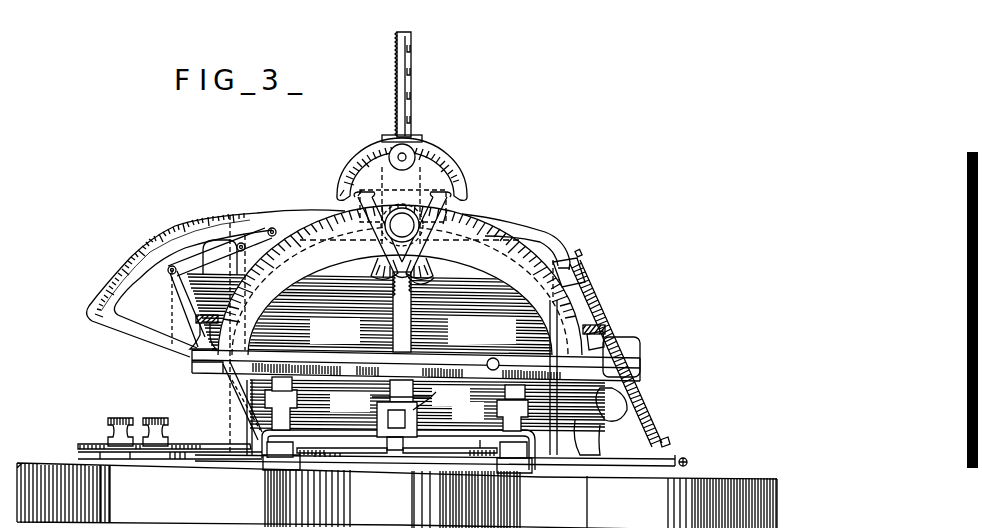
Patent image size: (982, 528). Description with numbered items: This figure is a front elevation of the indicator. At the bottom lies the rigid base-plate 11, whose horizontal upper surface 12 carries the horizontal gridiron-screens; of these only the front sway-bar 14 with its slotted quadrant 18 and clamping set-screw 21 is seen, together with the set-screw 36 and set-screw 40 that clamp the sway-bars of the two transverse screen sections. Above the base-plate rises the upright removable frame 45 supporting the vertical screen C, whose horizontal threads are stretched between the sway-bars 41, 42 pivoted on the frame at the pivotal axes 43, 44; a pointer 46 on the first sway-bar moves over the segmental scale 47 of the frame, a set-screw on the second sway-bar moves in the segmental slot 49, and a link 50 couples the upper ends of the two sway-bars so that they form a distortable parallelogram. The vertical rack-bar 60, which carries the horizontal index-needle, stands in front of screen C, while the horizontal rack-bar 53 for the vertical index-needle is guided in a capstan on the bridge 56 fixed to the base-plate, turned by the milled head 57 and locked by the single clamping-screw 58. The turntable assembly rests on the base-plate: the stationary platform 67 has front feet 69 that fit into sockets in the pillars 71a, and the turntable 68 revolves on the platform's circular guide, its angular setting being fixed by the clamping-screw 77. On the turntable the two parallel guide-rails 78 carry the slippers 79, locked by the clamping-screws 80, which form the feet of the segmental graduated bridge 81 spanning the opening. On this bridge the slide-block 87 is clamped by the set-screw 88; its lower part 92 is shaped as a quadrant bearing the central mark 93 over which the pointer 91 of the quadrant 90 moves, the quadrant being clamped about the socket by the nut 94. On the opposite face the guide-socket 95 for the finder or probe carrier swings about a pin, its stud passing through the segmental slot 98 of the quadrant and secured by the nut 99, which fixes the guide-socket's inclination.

The base-plate 11 is at (397, 495).
The horizontal upper surface 12 is at (714, 478).
The sway-bar 14 is at (308, 438).
The slotted quadrant 18 is at (374, 457).
The set-screw 21 is at (405, 446).
The set-screw 36 is at (158, 417).
The set-screw 40 is at (118, 417).
The sway-bar 41 is at (177, 301).
The sway-bar 42 is at (585, 298).
The pivotal axis 43 is at (236, 403).
The pivotal axis 44 is at (618, 426).
The upright removable frame 45 is at (150, 340).
The pointer 46 is at (169, 262).
The segmental scale 47 is at (145, 258).
The segmental slot 49 is at (641, 353).
The link 50 is at (206, 254).
The rack-bar 53 is at (342, 447).
The bridge 56 is at (478, 441).
The milled head 57 is at (430, 403).
The clamping-screw 58 is at (382, 396).
The rack-bar 60 is at (412, 86).
The stationary platform 67 is at (455, 364).
The turntable 68 is at (364, 362).
The front pair of feet 69 is at (396, 417).
The pillars 71a is at (544, 498).
The clamping-screw 77 is at (494, 358).
The guide-rails 78 is at (242, 352).
The slippers 79 is at (193, 363).
The clamping-screws 80 is at (195, 319).
The bridge 81 is at (330, 221).
The slide-block 87 is at (466, 222).
The set-screw 88 is at (402, 225).
The quadrant 90 is at (456, 162).
The pointer 91 is at (376, 266).
The lower part of the slide-block 92 is at (440, 259).
The central mark 93 is at (430, 271).
The nut 94 is at (398, 209).
The guide-socket 95 is at (384, 138).
The segmental slot 98 is at (356, 161).
The nut 99 is at (412, 152).